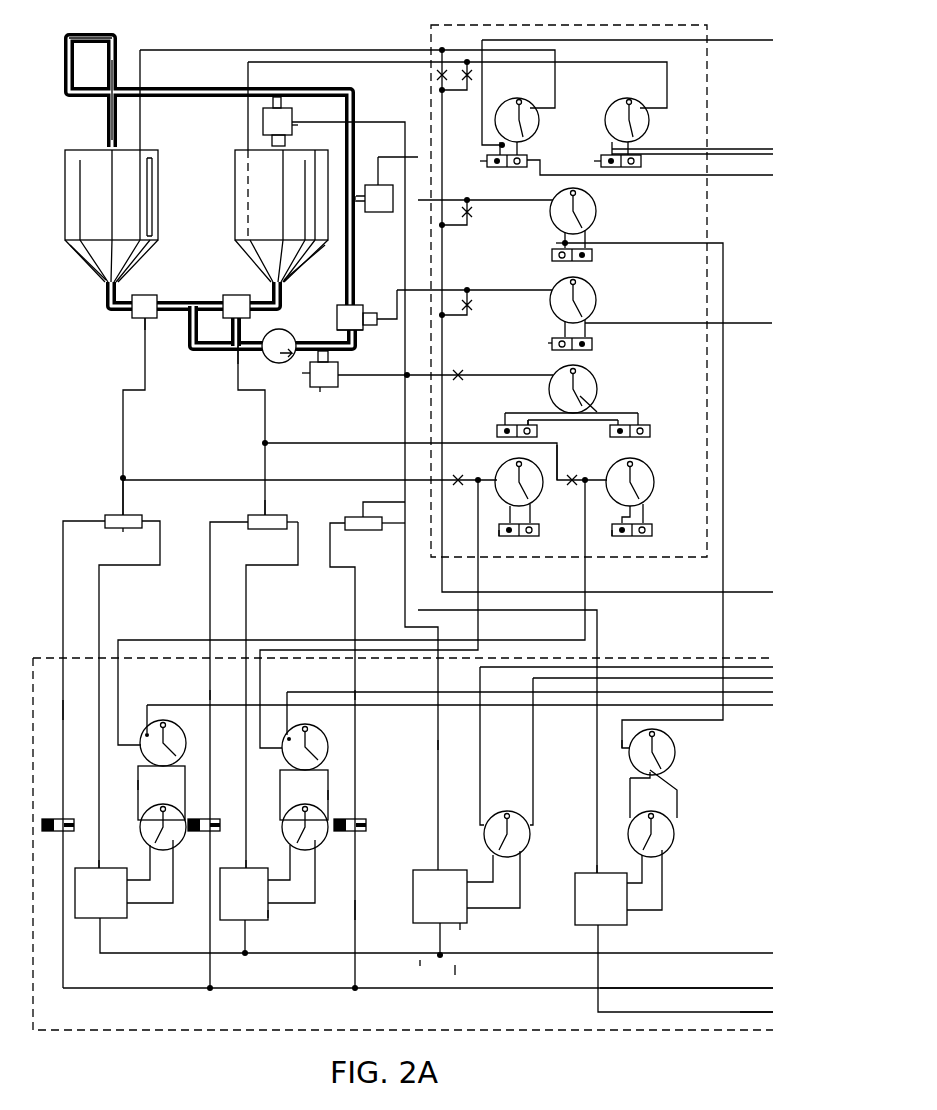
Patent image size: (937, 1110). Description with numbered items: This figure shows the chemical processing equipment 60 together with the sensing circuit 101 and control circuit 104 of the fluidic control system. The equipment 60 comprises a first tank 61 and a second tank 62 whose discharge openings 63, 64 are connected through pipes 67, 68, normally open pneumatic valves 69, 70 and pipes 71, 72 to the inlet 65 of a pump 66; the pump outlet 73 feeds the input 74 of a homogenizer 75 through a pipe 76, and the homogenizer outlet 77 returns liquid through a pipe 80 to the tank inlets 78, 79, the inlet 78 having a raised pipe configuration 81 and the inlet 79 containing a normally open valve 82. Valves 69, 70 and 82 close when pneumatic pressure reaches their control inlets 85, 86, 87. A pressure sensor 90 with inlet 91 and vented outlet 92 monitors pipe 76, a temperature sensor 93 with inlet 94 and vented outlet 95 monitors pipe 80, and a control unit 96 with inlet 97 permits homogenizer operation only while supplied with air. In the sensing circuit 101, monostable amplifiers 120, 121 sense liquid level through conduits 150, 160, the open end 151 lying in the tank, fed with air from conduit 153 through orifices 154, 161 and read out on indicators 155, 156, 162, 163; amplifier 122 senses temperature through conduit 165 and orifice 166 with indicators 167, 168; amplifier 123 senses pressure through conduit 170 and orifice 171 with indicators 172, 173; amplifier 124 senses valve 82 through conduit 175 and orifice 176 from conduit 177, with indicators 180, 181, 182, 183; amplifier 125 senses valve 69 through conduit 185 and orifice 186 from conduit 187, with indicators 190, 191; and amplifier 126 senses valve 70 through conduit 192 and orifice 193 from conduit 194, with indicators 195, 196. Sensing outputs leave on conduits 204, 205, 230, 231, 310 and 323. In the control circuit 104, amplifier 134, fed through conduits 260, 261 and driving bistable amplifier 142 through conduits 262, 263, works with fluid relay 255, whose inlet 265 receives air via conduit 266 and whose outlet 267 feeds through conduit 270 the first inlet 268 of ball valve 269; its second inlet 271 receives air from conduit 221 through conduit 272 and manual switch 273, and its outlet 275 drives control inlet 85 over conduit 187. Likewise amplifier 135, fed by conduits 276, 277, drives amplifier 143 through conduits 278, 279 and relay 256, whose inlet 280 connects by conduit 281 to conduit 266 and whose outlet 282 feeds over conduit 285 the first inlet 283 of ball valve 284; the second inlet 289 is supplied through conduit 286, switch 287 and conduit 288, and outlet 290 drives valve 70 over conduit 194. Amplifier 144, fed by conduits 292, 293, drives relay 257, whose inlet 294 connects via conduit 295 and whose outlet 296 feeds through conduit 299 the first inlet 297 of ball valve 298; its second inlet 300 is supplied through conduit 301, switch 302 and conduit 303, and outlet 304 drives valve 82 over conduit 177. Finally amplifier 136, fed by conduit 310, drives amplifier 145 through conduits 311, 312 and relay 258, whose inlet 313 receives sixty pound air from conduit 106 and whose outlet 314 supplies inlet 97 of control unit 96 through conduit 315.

The chemical processing equipment 60 is at (100, 366).
The first tank 61 is at (64, 196).
The second tank 62 is at (238, 216).
The discharge opening 63 is at (98, 276).
The discharge opening 64 is at (272, 280).
The inlet 65 is at (250, 362).
The pump 66 is at (276, 330).
The pipe 67 is at (104, 298).
The pipe 68 is at (284, 294).
The normally open valve 69 is at (144, 292).
The normally open valve 70 is at (236, 292).
The pipe 71 is at (170, 298).
The pipe 72 is at (222, 354).
The outlet 73 is at (300, 334).
The input 74 is at (332, 355).
The homogenizer 75 is at (346, 302).
The pipe 76 is at (300, 375).
The outlet 77 is at (366, 300).
The inlet 78 is at (106, 126).
The inlet 79 is at (286, 142).
The pipe 80 is at (172, 90).
The pipe configuration 81 is at (72, 34).
The normally open valve 82 is at (292, 110).
The control inlet 85 is at (135, 318).
The control inlet 86 is at (236, 328).
The control inlet 87 is at (292, 128).
The pressure sensor 90 is at (340, 380).
The inlet 91 is at (340, 370).
The outlet 92 is at (326, 388).
The temperature sensor 93 is at (390, 212).
The inlet 94 is at (376, 186).
The outlet 95 is at (360, 204).
The control unit 96 is at (375, 312).
The inlet 97 is at (376, 326).
The sensing circuit 101 is at (710, 96).
The control circuit 104 is at (55, 657).
The high pressure conduit 106 is at (772, 1014).
The fluid amplifier 120 is at (538, 126).
The fluid amplifier 121 is at (614, 104).
The fluid amplifier 122 is at (597, 204).
The fluid amplifier 123 is at (597, 298).
The fluid amplifier 124 is at (597, 386).
The fluid amplifier 125 is at (514, 460).
The fluid amplifier 126 is at (655, 474).
The fluid amplifier 134 is at (182, 730).
The fluid amplifier 135 is at (326, 730).
The fluid amplifier 136 is at (675, 742).
The fluid amplifier 142 is at (180, 850).
The fluid amplifier 143 is at (326, 850).
The fluid amplifier 144 is at (530, 836).
The fluid amplifier 145 is at (674, 836).
The conduit 150 is at (248, 50).
The end 151 is at (154, 226).
The conduit 153 is at (774, 596).
The orifice 154 is at (438, 76).
The visual indicator 155 is at (516, 170).
The visual indicator 156 is at (486, 164).
The conduit 160 is at (320, 66).
The orifice 161 is at (478, 86).
The visual indicator 162 is at (641, 162).
The visual indicator 163 is at (600, 164).
The conduit 165 is at (484, 204).
The orifice 166 is at (474, 212).
The indicator 167 is at (556, 246).
The indicator 168 is at (594, 258).
The conduit 170 is at (497, 288).
The orifice 171 is at (474, 308).
The indicator 172 is at (550, 344).
The indicator 173 is at (594, 344).
The conduit 175 is at (522, 378).
The orifice 176 is at (462, 370).
The conduit 177 is at (366, 122).
The indicator 180 is at (650, 432).
The indicator 181 is at (582, 462).
The indicator 182 is at (497, 434).
The indicator 183 is at (538, 436).
The conduit 185 is at (280, 478).
The orifice 186 is at (458, 476).
The conduit 187 is at (123, 412).
The indicator 190 is at (498, 534).
The indicator 191 is at (539, 530).
The conduit 192 is at (362, 446).
The orifice 193 is at (572, 472).
The conduit 194 is at (264, 455).
The indicator 195 is at (610, 534).
The indicator 196 is at (652, 530).
The conduit 204 is at (774, 176).
The conduit 205 is at (774, 154).
The conduit 221 is at (770, 990).
The conduit 230 is at (774, 42).
The conduit 231 is at (774, 148).
The fluid relay 255 is at (106, 920).
The fluid relay 256 is at (270, 918).
The fluid relay 257 is at (452, 924).
The fluid relay 258 is at (608, 926).
The conduit 260 is at (196, 636).
The conduit 261 is at (146, 702).
The conduit 262 is at (138, 786).
The conduit 263 is at (186, 794).
The inlet 265 is at (98, 932).
The conduit 266 is at (396, 956).
The outlet 267 is at (99, 868).
The first inlet 268 is at (142, 518).
The first two-way ball valve 269 is at (118, 530).
The conduit 270 is at (99, 610).
The second inlet 271 is at (88, 514).
The conduit 272 is at (63, 686).
The manually operated switch 273 is at (60, 832).
The outlet 275 is at (122, 504).
The conduit 276 is at (478, 632).
The conduit 277 is at (288, 690).
The conduit 278 is at (282, 784).
The conduit 279 is at (330, 788).
The inlet 280 is at (245, 930).
The conduit 281 is at (244, 954).
The outlet 282 is at (246, 866).
The first inlet 283 is at (288, 518).
The second ball valve 284 is at (266, 530).
The conduit 285 is at (246, 578).
The conduit 286 is at (210, 692).
The manually operated switch 287 is at (210, 818).
The conduit 288 is at (200, 984).
The second inlet 289 is at (244, 508).
The outlet 290 is at (266, 500).
The conduit 292 is at (774, 666).
The conduit 293 is at (774, 678).
The inlet 294 is at (436, 926).
The conduit 295 is at (444, 958).
The outlet 296 is at (436, 868).
The first inlet 297 is at (384, 528).
The third ball valve 298 is at (356, 532).
The conduit 299 is at (436, 736).
The second inlet 300 is at (336, 510).
The conduit 301 is at (356, 690).
The manually operated switch 302 is at (366, 826).
The conduit 303 is at (354, 920).
The outlet 304 is at (362, 502).
The conduit 310 is at (725, 268).
The conduit 311 is at (628, 792).
The conduit 312 is at (678, 788).
The inlet 313 is at (590, 926).
The outlet 314 is at (590, 870).
The conduit 315 is at (596, 746).
The conduit 323 is at (773, 322).